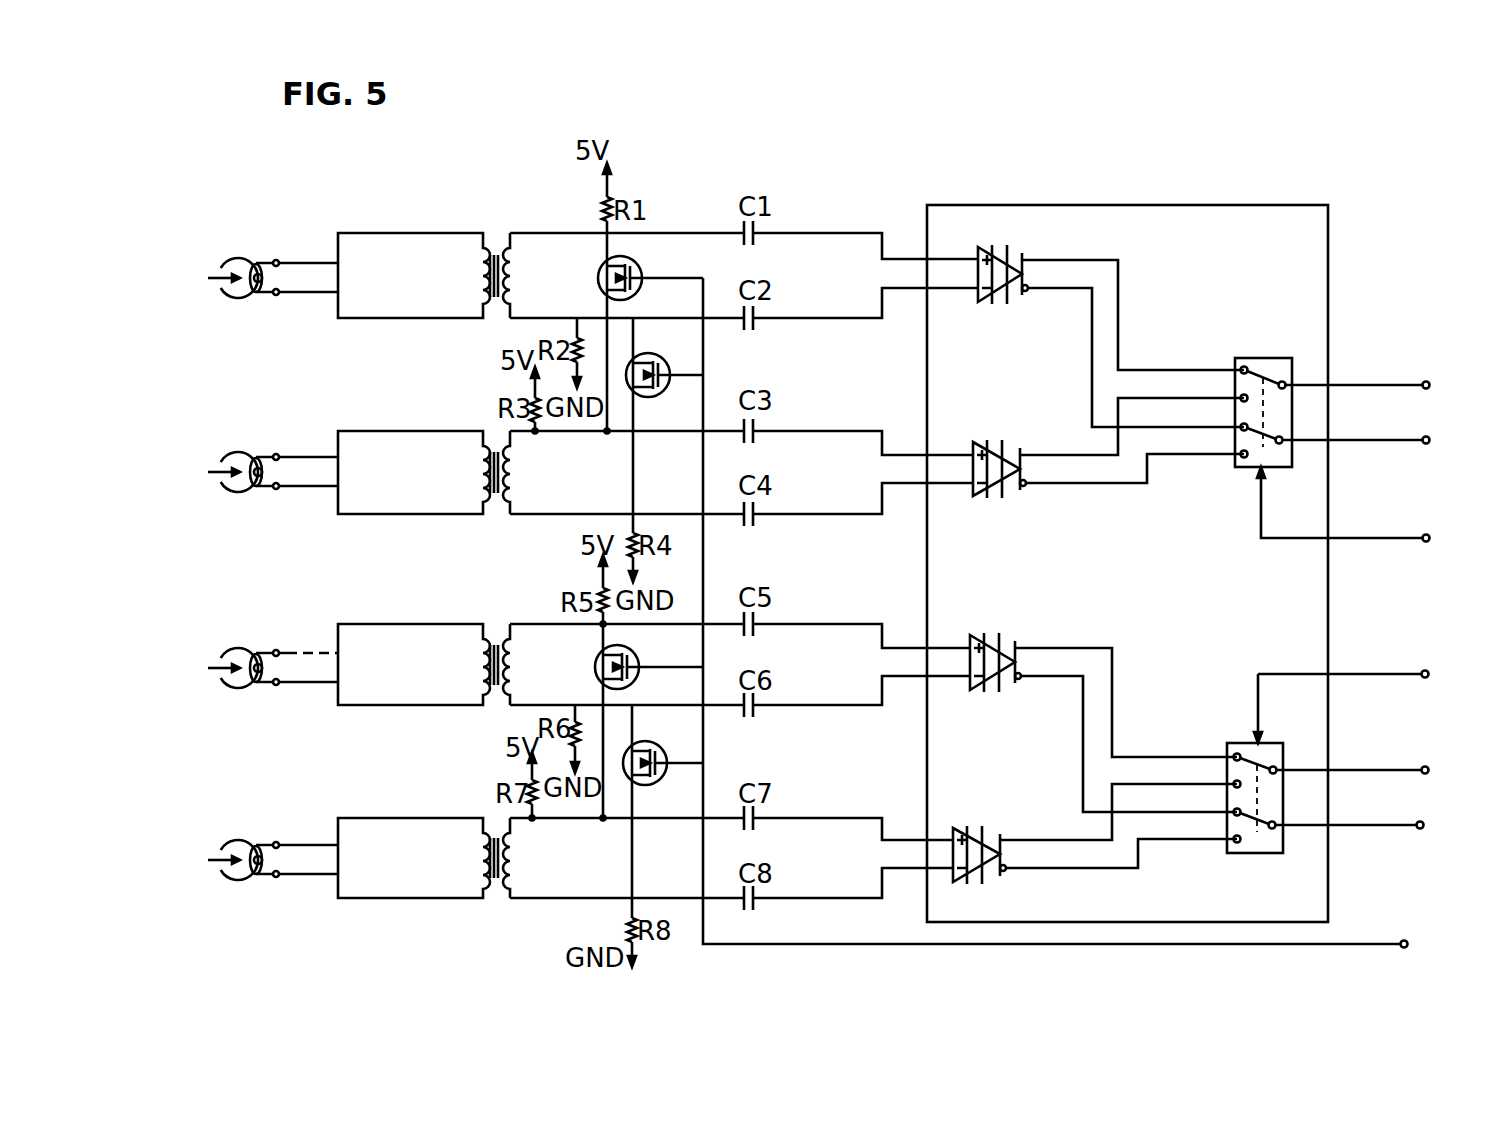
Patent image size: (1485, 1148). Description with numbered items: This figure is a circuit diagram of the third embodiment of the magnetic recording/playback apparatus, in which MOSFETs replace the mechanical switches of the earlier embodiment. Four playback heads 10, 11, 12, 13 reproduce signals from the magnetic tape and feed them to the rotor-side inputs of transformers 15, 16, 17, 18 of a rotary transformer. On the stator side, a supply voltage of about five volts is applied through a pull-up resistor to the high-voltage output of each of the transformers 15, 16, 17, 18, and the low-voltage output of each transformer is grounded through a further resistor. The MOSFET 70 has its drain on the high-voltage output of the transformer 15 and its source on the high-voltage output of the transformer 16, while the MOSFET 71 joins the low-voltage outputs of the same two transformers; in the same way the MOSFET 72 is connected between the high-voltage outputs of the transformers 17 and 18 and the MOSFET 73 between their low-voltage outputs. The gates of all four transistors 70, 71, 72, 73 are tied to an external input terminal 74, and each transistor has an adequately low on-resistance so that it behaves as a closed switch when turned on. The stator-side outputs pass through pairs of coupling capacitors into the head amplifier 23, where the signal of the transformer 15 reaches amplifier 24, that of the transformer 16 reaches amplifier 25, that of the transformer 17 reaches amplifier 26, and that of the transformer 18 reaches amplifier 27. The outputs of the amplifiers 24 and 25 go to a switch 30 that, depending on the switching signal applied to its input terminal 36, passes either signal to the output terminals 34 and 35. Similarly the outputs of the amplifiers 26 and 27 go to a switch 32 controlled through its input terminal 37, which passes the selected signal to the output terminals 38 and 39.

The playback head 10 is at (257, 258).
The playback head 11 is at (257, 452).
The playback head 12 is at (257, 642).
The playback head 13 is at (257, 834).
The transformer 15 is at (482, 233).
The transformer 16 is at (483, 431).
The transformer 17 is at (483, 624).
The transformer 18 is at (483, 818).
The head amplifier 23 is at (1303, 205).
The amplifier 24 is at (1000, 305).
The amplifier 25 is at (993, 500).
The amplifier 26 is at (990, 692).
The amplifier 27 is at (975, 884).
The switch 30 is at (1303, 355).
The switch 32 is at (1300, 853).
The output terminal 34 is at (1430, 389).
The output terminal 35 is at (1430, 444).
The input terminal 36 is at (1430, 542).
The input terminal 37 is at (1429, 678).
The output terminal 38 is at (1429, 774).
The output terminal 39 is at (1424, 829).
The MOSFET 70 is at (633, 260).
The MOSFET 71 is at (657, 357).
The MOSFET 72 is at (631, 650).
The MOSFET 73 is at (655, 745).
The external input terminal 74 is at (1408, 940).